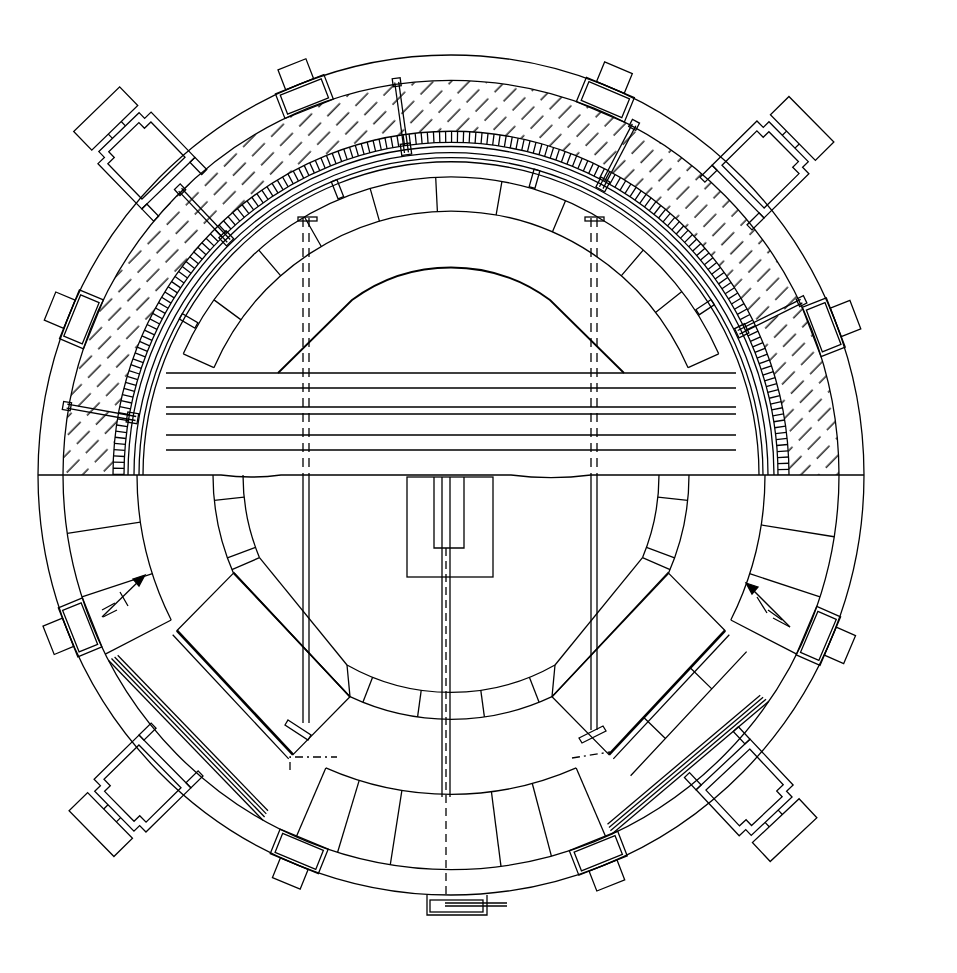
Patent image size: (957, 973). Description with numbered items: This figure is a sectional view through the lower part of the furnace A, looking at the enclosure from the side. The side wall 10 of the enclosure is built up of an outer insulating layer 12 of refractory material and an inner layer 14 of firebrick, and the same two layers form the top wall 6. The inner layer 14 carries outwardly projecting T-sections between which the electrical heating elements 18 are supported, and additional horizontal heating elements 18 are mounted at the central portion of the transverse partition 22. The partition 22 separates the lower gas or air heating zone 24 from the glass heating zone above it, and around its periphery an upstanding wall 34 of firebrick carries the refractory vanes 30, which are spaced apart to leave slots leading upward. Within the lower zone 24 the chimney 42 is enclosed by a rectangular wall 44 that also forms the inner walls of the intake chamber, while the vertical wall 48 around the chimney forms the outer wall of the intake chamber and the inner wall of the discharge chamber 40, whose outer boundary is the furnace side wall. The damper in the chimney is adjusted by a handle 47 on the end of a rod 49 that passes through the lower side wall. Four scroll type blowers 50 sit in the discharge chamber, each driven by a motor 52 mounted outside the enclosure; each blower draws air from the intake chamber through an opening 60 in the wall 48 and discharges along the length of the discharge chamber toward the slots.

The furnace A is at (690, 113).
The side wall 10 is at (552, 80).
The outer insulating layer 12 is at (455, 95).
The inner layer 14 is at (478, 150).
The electrical heating elements 18 is at (392, 396).
The transverse partition 22 is at (425, 266).
The lower gas or air heating zone 24 is at (212, 566).
The vanes 30 is at (536, 190).
The upstanding wall 34 is at (542, 222).
The discharge chamber 40 is at (735, 525).
The chimney 42 is at (457, 508).
The rectangular wall 44 is at (480, 555).
The handle 47 is at (457, 907).
The vertical wall 48 is at (268, 607).
The rod 49 is at (448, 638).
The blowers 50 is at (267, 653).
The motors 52 is at (780, 170).
The opening 60 is at (335, 657).
The top wall 6 is at (446, 592).